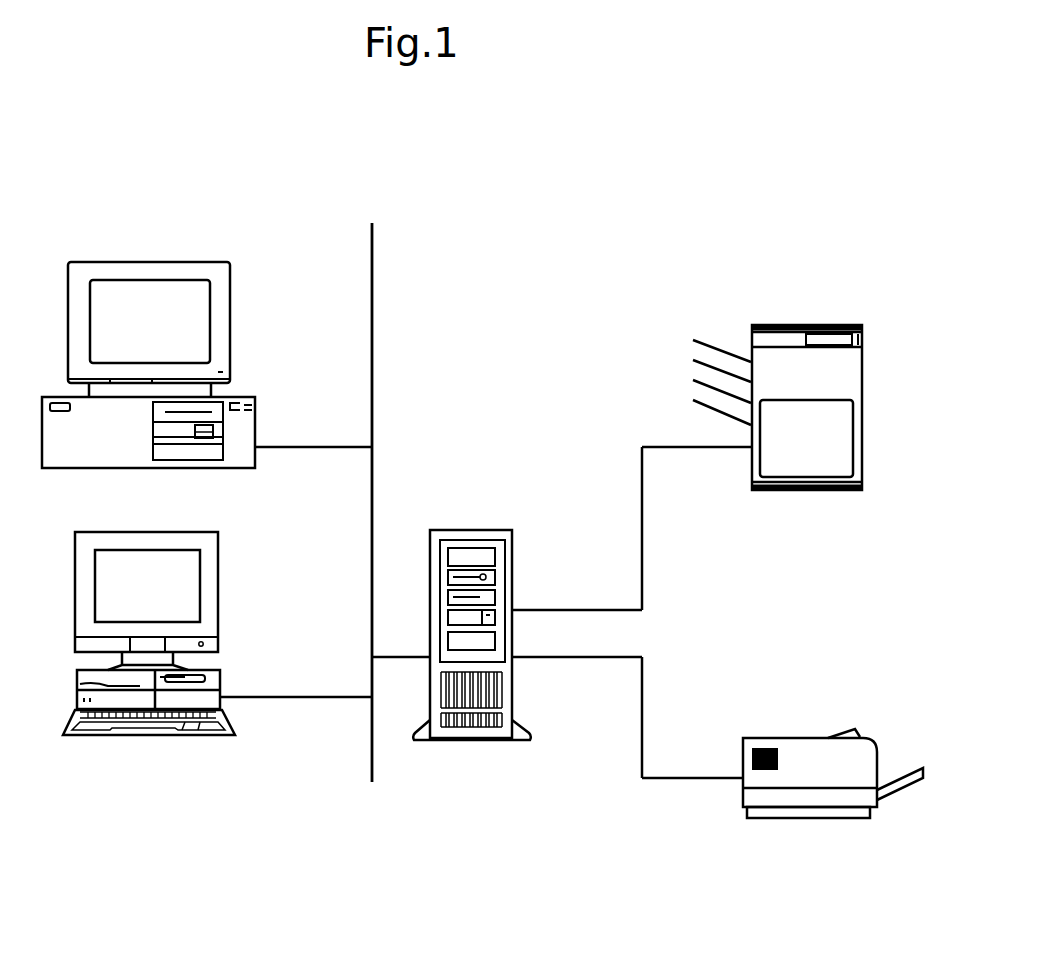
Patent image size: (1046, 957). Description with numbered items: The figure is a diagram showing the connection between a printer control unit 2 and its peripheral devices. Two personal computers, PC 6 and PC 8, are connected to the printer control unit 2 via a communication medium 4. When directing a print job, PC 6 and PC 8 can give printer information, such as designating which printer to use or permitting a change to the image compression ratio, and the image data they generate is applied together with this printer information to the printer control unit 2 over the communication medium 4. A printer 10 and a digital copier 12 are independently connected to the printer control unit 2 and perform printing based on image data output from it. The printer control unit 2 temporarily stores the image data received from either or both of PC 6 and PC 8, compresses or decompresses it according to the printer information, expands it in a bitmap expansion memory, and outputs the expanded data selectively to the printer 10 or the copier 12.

The printer control unit 2 is at (500, 530).
The communication medium 4 is at (371, 400).
The personal computer 6 is at (203, 263).
The personal computer 8 is at (212, 563).
The printer 10 is at (863, 753).
The digital copier 12 is at (845, 372).